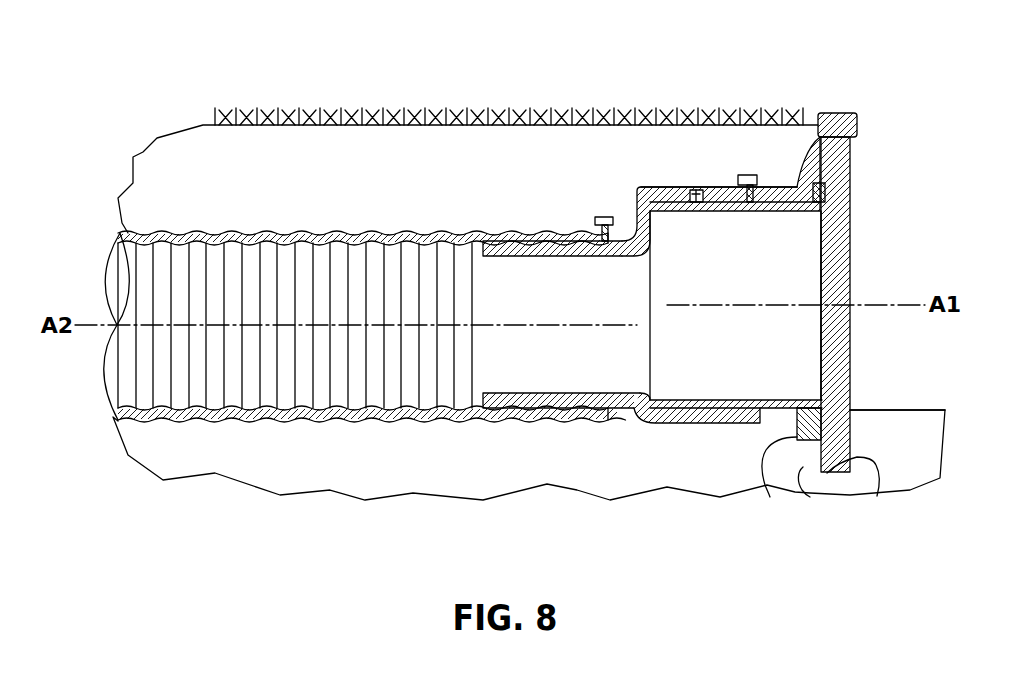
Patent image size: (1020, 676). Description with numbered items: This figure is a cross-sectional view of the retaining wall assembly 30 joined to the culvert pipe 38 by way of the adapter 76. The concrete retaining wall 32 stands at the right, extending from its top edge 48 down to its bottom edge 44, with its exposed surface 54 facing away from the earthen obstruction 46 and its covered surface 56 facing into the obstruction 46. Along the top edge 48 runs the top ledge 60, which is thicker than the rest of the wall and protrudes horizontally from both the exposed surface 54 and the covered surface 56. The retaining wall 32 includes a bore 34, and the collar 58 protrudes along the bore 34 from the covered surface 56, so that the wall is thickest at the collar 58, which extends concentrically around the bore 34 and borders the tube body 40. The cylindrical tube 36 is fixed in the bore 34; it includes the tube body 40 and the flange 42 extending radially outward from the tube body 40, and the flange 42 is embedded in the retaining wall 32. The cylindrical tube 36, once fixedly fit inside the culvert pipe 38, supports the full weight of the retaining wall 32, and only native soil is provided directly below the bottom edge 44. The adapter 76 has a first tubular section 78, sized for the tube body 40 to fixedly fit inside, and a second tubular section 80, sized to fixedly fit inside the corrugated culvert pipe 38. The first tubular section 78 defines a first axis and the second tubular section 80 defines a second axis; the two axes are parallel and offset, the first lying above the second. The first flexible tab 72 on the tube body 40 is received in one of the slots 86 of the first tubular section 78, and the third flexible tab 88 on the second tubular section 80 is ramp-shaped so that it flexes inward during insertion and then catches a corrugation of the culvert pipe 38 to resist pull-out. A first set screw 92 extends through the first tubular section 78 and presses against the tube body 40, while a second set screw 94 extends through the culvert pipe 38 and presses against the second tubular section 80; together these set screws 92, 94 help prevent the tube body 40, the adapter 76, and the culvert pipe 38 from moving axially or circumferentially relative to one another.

The retaining wall assembly 30 is at (857, 69).
The concrete retaining wall 32 is at (851, 166).
The bore 34 is at (835, 204).
The cylindrical tube 36 is at (790, 211).
The culvert pipe 38 is at (312, 232).
The tube body 40 is at (686, 212).
The flange 42 is at (847, 417).
The bottom edge 44 is at (828, 478).
The earthen obstruction 46 is at (705, 187).
The top edge 48 is at (818, 113).
The exposed surface 54 is at (871, 448).
The covered surface 56 is at (808, 472).
The collar 58 is at (770, 455).
The top ledge 60 is at (858, 127).
The first flexible tab 72 is at (693, 190).
The adapter 76 is at (662, 186).
The first tubular section 78 is at (683, 425).
The second tubular section 80 is at (553, 406).
The slots 86 is at (747, 175).
The third flexible tab 88 is at (562, 233).
The first set screw 92 is at (813, 183).
The second set screw 94 is at (607, 217).